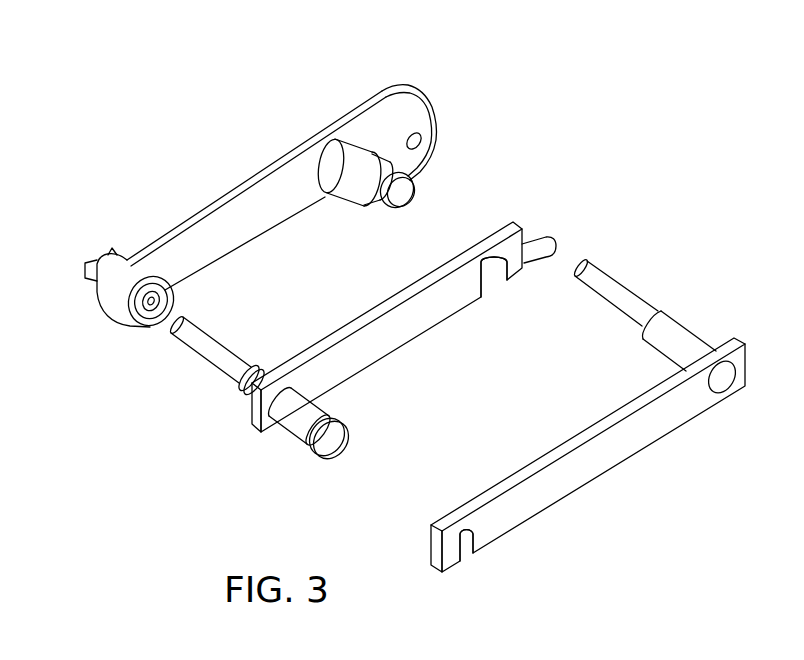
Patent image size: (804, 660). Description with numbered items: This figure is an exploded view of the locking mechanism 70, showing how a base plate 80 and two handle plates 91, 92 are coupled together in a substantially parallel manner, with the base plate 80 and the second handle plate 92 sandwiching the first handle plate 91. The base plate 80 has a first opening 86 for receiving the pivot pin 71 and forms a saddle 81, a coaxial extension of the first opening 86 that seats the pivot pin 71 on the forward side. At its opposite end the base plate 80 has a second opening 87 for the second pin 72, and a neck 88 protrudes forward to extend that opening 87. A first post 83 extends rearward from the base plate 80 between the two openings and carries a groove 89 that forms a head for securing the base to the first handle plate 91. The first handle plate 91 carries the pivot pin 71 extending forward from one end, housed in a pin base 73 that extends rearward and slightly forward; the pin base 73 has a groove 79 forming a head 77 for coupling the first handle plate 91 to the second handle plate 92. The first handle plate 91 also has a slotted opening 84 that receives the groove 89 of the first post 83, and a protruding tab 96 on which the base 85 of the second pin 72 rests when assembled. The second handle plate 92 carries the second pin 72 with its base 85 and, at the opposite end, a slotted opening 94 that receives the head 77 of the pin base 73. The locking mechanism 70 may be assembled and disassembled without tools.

The locking mechanism 70 is at (162, 460).
The pivot pin 71 is at (210, 328).
The second pin 72 is at (604, 277).
The pin base 73 is at (242, 393).
The head 77 is at (338, 441).
The groove 79 is at (329, 416).
The base plate 80 is at (210, 204).
The saddle 81 is at (90, 279).
The first post 83 is at (402, 194).
The slotted opening 84 is at (492, 278).
The base 85 is at (678, 323).
The first opening 86 is at (150, 330).
The second opening 87 is at (433, 137).
The neck 88 is at (372, 96).
The groove 89 is at (379, 192).
The first handle plate 91 is at (390, 333).
The second handle plate 92 is at (580, 480).
The slotted opening 94 is at (467, 557).
The protruding tab 96 is at (543, 242).